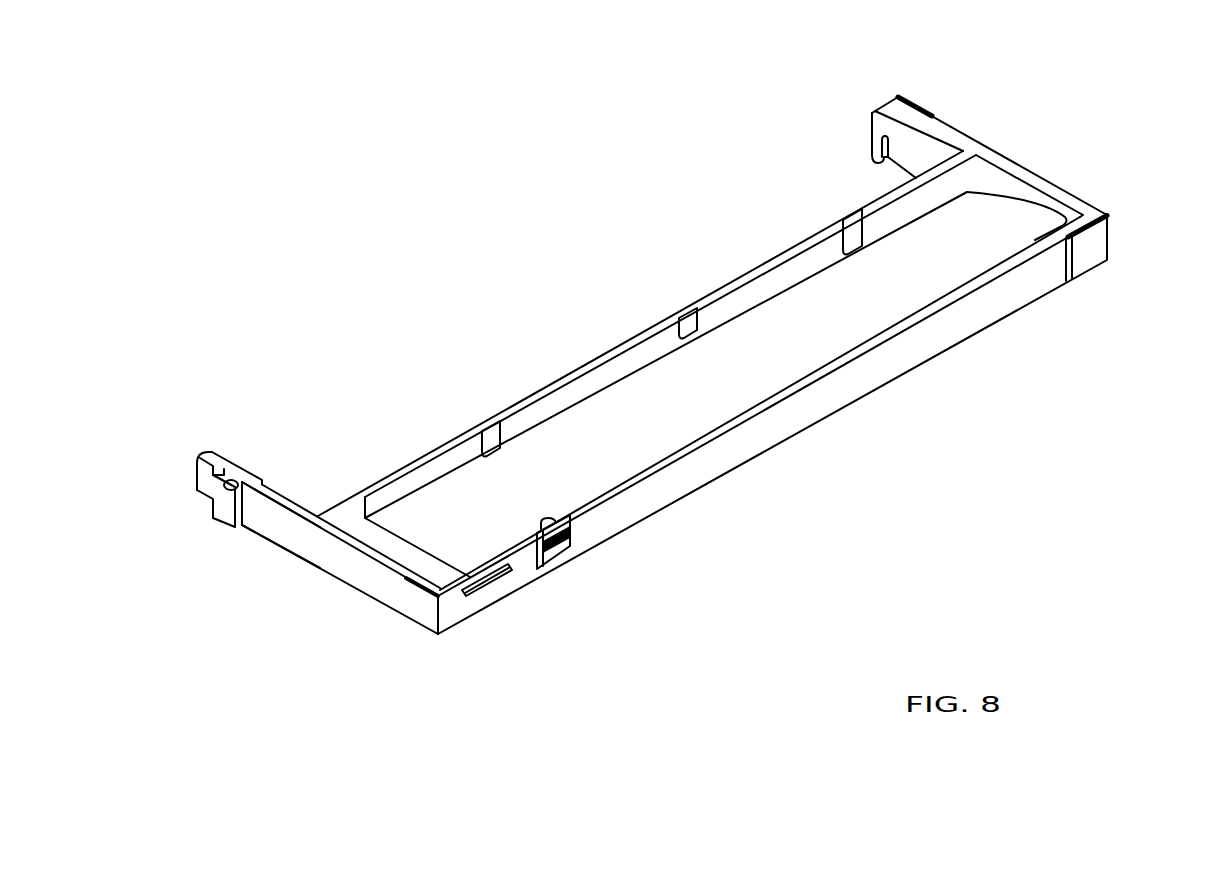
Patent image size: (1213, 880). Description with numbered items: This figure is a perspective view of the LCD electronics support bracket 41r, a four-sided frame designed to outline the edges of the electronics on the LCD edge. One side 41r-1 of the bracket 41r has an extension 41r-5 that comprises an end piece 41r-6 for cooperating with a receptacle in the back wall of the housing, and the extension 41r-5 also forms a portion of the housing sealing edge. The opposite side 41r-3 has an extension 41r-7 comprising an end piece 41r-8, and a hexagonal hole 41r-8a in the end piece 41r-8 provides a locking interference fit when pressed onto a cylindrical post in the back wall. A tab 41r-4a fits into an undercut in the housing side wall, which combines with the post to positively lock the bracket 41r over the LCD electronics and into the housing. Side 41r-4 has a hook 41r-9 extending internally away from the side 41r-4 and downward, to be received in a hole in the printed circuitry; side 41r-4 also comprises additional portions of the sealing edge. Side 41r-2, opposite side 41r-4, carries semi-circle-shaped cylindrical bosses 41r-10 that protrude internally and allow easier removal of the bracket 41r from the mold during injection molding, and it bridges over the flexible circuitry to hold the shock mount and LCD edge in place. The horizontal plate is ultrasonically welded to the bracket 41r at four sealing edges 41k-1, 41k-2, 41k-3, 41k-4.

The bracket 41r is at (820, 455).
The side 41r-1 is at (1047, 182).
The side 41r-2 is at (788, 256).
The side 41r-3 is at (353, 565).
The side 41r-4 is at (918, 350).
The tab 41r-4a is at (503, 593).
The extension 41r-5 is at (943, 123).
The end piece 41r-6 is at (876, 148).
The extension 41r-7 is at (280, 523).
The end piece 41r-8 is at (225, 510).
The hexagonal hole 41r-8a is at (236, 480).
The hook 41r-9 is at (538, 522).
The semi-circle-shaped cylindrical bosses 41r-10 is at (863, 247).
The sealing edge 41k-1 is at (915, 98).
The sealing edge 41k-2 is at (1093, 245).
The sealing edge 41k-3 is at (563, 550).
The sealing edge 41k-4 is at (420, 580).